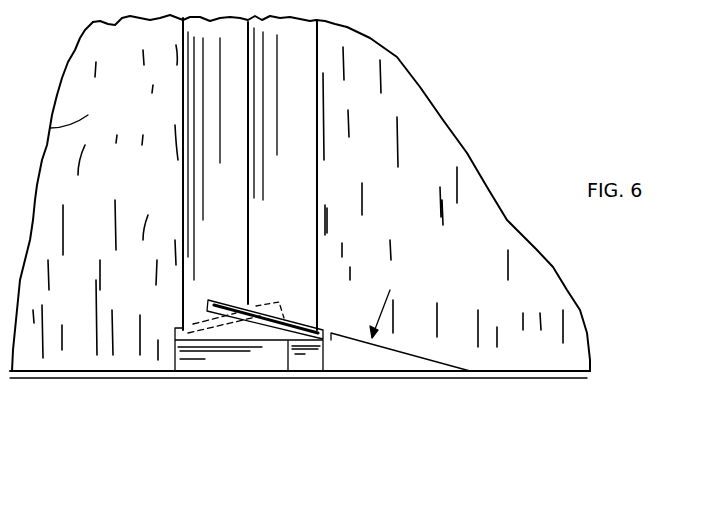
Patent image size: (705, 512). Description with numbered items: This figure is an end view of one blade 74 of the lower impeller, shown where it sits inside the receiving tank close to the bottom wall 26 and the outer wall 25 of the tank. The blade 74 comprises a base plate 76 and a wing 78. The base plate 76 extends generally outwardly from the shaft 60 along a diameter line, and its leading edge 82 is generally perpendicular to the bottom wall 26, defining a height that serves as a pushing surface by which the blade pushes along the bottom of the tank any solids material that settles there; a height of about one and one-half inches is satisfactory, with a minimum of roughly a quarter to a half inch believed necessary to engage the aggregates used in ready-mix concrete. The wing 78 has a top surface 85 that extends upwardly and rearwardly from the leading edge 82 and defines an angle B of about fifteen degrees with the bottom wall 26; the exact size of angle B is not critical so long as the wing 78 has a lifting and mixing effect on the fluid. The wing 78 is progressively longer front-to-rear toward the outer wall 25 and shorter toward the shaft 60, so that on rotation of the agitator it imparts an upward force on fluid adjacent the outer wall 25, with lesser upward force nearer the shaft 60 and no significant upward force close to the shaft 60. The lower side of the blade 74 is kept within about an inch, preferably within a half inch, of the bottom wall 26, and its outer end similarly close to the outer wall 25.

The outer wall 25 is at (50, 127).
The shaft 60 is at (317, 183).
The top surface 85 is at (297, 340).
The base plate 76 is at (175, 360).
The wing 78 is at (270, 327).
The bottom wall 26 is at (47, 373).
The blade 74 is at (198, 372).
The leading edge 82 is at (332, 366).
The angle B is at (360, 371).